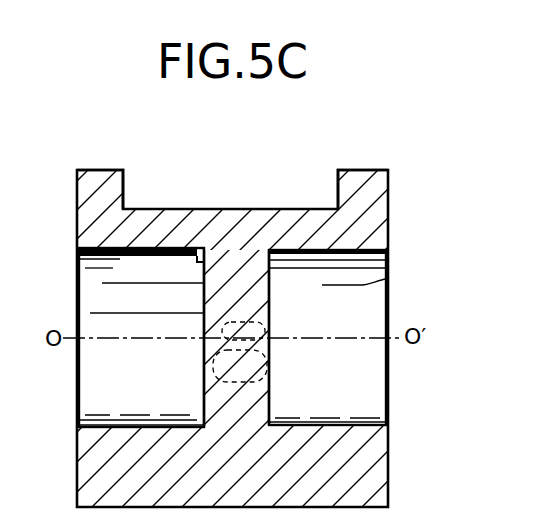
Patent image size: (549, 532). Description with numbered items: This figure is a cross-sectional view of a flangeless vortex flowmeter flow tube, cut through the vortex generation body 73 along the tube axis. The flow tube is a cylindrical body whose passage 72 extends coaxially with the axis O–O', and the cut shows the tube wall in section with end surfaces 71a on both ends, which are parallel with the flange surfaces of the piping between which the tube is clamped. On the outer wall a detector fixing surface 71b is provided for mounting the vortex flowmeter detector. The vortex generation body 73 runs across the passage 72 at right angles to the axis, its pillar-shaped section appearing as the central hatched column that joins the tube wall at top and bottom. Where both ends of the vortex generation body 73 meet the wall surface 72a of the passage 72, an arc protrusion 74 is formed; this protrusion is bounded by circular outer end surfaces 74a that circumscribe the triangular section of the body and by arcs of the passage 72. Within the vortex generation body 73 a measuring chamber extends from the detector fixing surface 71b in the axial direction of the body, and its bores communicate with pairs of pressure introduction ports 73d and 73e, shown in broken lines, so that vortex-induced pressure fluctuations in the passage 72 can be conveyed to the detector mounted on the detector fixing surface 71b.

The end surfaces 71a is at (79, 243).
The detector fixing surface 71b is at (209, 208).
The passage 72 is at (388, 284).
The wall surface 72a is at (357, 423).
The vortex generation body 73 is at (270, 291).
The pressure introduction ports 73d is at (275, 373).
The pressure introduction ports 73e is at (385, 313).
The arc protrusion 74 is at (180, 260).
The circular outer end surfaces 74a is at (153, 290).